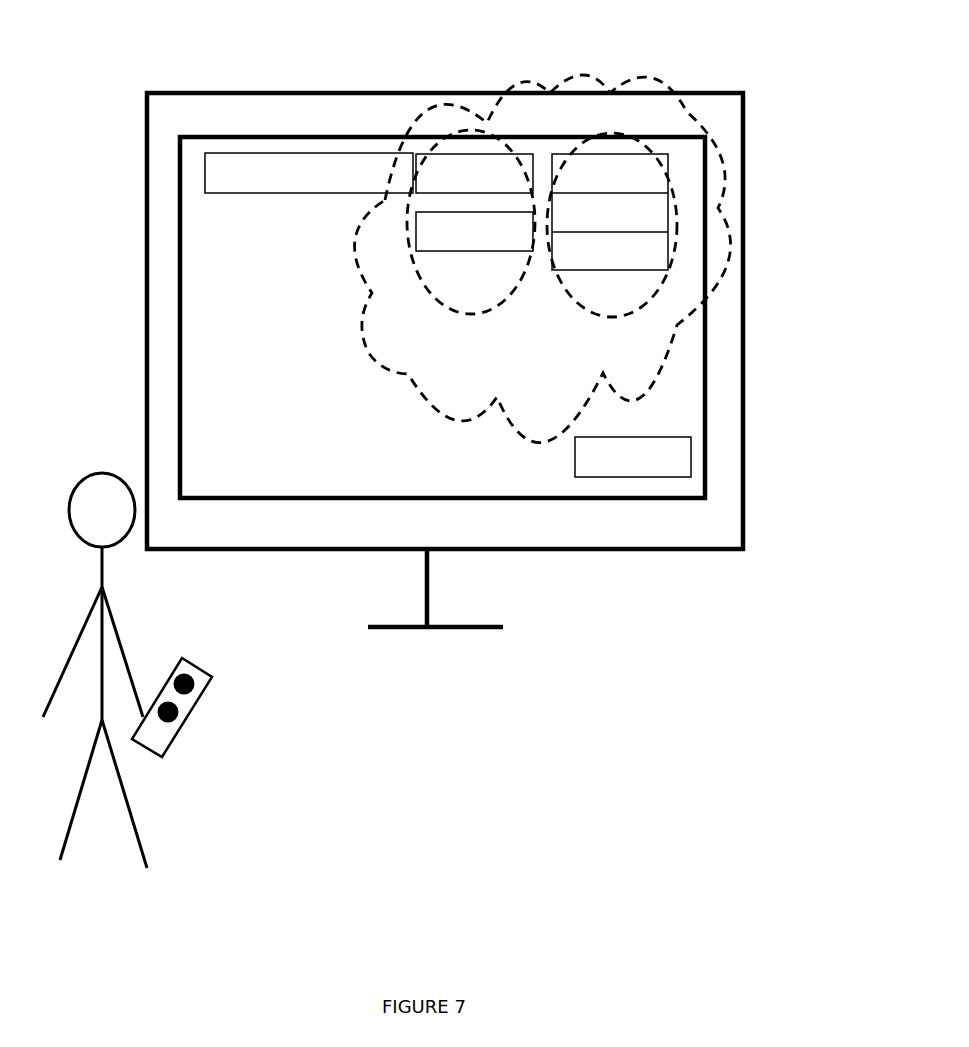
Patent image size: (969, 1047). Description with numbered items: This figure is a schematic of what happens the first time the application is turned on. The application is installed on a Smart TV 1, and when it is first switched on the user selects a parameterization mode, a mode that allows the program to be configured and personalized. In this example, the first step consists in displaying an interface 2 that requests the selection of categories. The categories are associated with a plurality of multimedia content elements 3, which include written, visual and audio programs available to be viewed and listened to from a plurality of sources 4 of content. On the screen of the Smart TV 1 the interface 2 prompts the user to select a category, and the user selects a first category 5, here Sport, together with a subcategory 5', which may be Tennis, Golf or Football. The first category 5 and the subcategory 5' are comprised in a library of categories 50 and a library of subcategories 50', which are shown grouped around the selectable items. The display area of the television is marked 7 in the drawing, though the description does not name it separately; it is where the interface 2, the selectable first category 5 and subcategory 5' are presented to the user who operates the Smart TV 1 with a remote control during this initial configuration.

The Smart TV 1 is at (155, 128).
The interface 2 is at (330, 152).
The multimedia content elements 3 is at (367, 350).
The sources of content 4 is at (633, 457).
The first category 5 is at (474, 153).
The subcategory 5' is at (672, 212).
The display screen 7 is at (690, 407).
The library of categories 50 is at (471, 251).
The library of subcategories 50' is at (678, 225).